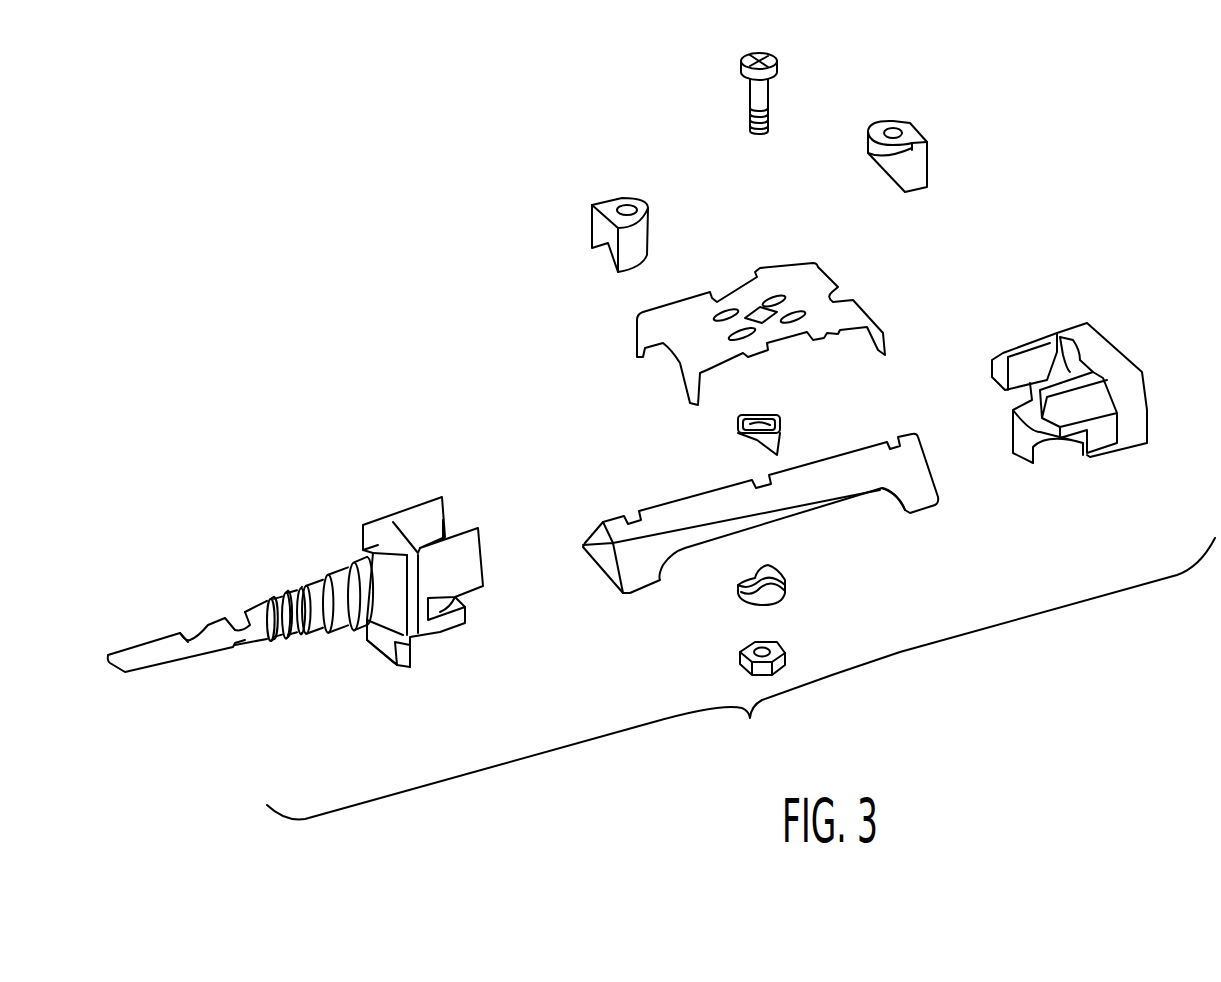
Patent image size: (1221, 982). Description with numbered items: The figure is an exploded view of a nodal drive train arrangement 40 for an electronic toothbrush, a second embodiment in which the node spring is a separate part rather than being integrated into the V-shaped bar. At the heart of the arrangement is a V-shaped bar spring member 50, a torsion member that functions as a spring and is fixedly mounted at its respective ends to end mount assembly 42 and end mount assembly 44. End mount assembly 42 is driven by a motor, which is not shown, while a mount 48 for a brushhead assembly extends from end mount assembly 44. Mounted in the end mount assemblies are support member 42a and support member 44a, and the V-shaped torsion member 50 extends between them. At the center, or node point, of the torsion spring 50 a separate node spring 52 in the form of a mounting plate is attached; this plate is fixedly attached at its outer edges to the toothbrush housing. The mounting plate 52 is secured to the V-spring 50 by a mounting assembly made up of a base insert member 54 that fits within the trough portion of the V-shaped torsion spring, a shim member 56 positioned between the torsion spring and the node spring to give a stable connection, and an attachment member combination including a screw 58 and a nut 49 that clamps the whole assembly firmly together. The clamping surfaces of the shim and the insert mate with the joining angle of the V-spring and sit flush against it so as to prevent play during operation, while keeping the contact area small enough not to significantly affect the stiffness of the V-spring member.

The nodal drive train arrangement 40 is at (741, 678).
The end mount assembly 42 is at (1060, 457).
The support member 42a is at (928, 168).
The end mount assembly 44 is at (413, 502).
The support member 44a is at (597, 230).
The mount for brushhead assembly 48 is at (300, 558).
The nut 49 is at (740, 660).
The V-shaped bar spring member 50 is at (682, 540).
The node spring 52 is at (738, 273).
The base insert member 54 is at (787, 590).
The shim member 56 is at (783, 427).
The screw 58 is at (779, 73).